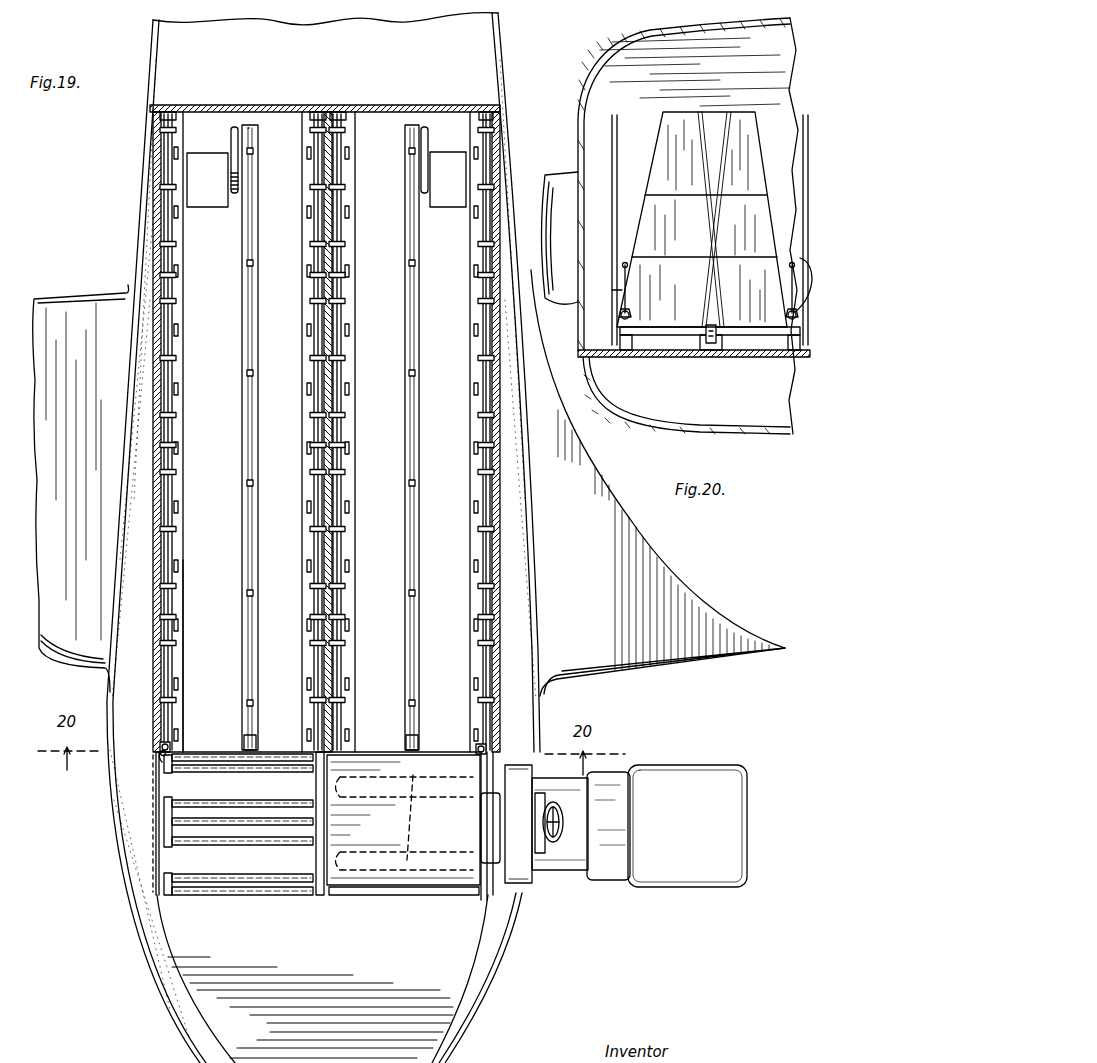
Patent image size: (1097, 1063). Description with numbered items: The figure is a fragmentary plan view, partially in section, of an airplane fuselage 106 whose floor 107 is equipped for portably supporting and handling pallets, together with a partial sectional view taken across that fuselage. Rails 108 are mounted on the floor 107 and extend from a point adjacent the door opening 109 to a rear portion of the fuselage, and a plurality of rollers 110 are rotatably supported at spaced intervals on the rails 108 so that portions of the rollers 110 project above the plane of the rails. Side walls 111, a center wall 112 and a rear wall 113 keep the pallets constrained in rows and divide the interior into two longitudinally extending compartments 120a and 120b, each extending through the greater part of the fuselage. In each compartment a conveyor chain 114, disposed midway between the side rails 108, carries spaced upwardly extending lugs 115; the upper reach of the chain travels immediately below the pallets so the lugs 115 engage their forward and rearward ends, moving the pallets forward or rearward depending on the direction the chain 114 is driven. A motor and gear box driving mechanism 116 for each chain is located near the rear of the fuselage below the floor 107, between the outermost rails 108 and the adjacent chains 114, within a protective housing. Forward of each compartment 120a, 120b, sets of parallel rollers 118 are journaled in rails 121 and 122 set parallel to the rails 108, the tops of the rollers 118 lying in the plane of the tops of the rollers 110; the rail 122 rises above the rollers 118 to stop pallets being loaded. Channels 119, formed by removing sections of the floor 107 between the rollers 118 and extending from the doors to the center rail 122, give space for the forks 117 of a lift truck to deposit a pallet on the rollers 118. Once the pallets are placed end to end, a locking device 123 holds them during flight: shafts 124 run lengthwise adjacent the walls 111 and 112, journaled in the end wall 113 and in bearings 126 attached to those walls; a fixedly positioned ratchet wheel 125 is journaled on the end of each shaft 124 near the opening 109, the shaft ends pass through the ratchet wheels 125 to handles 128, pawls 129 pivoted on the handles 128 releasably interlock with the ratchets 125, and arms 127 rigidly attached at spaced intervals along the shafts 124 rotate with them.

In FIG. 19, the airplane fuselage 106 is at (136, 220).
In FIG. 20, the airplane fuselage 106 is at (578, 76).
In FIG. 20, the floor 107 is at (660, 360).
In FIG. 19, the rails 108 is at (180, 492).
In FIG. 20, the rails 108 is at (770, 357).
In FIG. 19, the door opening 109 is at (161, 786).
In FIG. 19, the rollers 110 is at (186, 567).
In FIG. 19, the side walls 111 is at (152, 510).
In FIG. 20, the side walls 111 is at (612, 157).
In FIG. 19, the center wall 112 is at (333, 552).
In FIG. 20, the center wall 112 is at (803, 180).
In FIG. 19, the rear wall 113 is at (282, 105).
In FIG. 20, the rear wall 113 is at (630, 99).
In FIG. 19, the conveyor chain 114 is at (254, 332).
In FIG. 19, the lugs 115 is at (254, 592).
In FIG. 20, the lugs 115 is at (706, 335).
In FIG. 19, the motor and gear box driving mechanism 116 is at (215, 199).
In FIG. 19, the forks of a lift truck 117 is at (480, 800).
In FIG. 19, the parallel rollers 118 is at (232, 883).
In FIG. 19, the channels 119 is at (242, 774).
In FIG. 19, the compartment 120a is at (216, 418).
In FIG. 19, the compartment 120b is at (383, 418).
In FIG. 19, the rails 121 is at (167, 805).
In FIG. 19, the center rail 122 is at (318, 895).
In FIG. 19, the locking device 123 is at (478, 750).
In FIG. 20, the locking device 123 is at (620, 292).
In FIG. 19, the shafts 124 is at (174, 350).
In FIG. 19, the ratchet wheel 125 is at (160, 752).
In FIG. 20, the ratchet wheel 125 is at (628, 316).
In FIG. 19, the bearings 126 is at (176, 280).
In FIG. 19, the arms 127 is at (175, 417).
In FIG. 20, the arms 127 is at (782, 335).
In FIG. 19, the handles 128 is at (160, 758).
In FIG. 20, the handles 128 is at (808, 262).
In FIG. 19, the pawls 129 is at (170, 750).
In FIG. 20, the pawls 129 is at (628, 312).